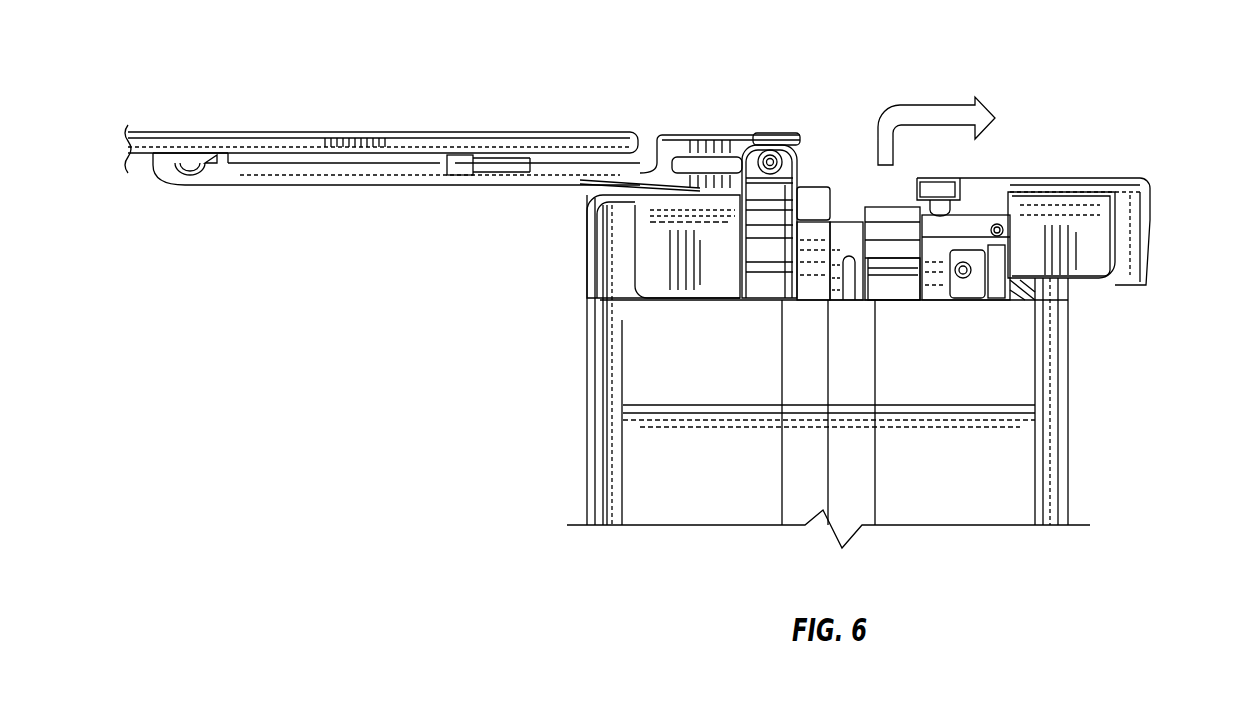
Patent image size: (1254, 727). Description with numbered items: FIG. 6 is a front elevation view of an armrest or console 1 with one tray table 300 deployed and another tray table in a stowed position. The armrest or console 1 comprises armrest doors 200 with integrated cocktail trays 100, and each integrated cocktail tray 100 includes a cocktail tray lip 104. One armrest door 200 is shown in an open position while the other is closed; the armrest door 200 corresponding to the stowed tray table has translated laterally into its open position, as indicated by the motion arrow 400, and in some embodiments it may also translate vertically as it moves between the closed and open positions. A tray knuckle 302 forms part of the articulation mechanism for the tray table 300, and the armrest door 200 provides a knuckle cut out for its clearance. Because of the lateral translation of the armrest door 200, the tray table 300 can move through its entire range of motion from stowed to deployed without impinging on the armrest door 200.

The armrest or console 1 is at (1150, 514).
The integrated cocktail tray 100 is at (652, 275).
The cocktail tray lip 104 is at (1067, 190).
The armrest door 200 is at (586, 200).
The tray table 300 is at (190, 137).
The tray knuckle 302 is at (770, 148).
The motion arrow 400 is at (938, 105).